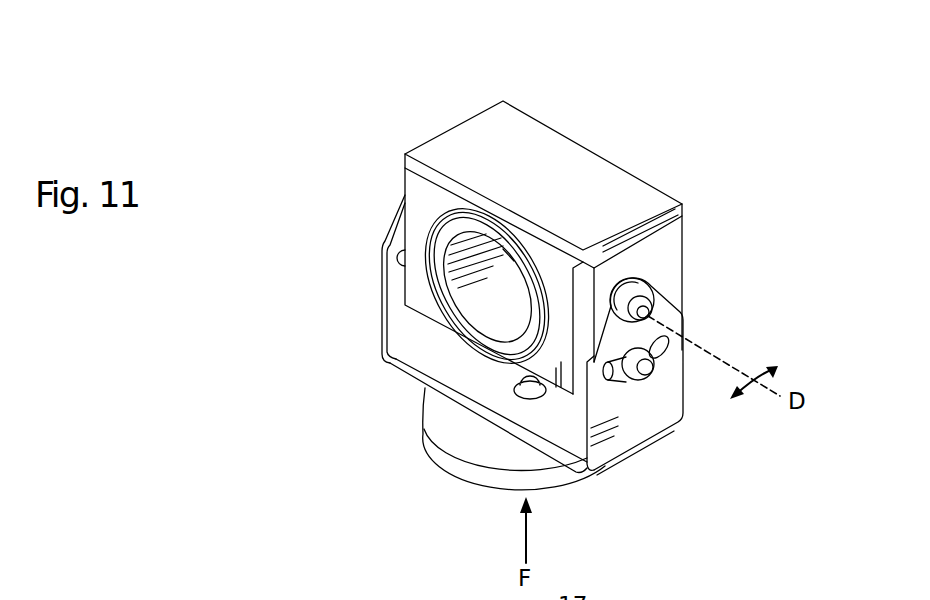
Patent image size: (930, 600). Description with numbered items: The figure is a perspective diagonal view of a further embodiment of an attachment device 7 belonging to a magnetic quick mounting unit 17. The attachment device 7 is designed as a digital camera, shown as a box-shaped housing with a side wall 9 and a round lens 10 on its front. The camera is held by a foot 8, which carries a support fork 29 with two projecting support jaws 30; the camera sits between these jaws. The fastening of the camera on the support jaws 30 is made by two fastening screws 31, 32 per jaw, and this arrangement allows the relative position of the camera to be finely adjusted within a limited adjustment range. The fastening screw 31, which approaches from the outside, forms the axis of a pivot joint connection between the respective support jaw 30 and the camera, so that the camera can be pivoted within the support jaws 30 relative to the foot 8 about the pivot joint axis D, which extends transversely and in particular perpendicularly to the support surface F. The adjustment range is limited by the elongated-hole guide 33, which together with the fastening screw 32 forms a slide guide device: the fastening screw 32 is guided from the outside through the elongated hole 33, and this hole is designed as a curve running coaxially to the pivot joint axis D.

The attachment device 7 is at (490, 128).
The magnetic quick mounting unit 17 is at (679, 160).
The housing side wall 9 is at (668, 247).
The lens 10 is at (480, 318).
The support jaw 30 is at (383, 282).
The fastening screw 31 is at (645, 294).
The foot 8 is at (456, 435).
The elongated-hole guide 33 is at (608, 377).
The support fork 29 is at (562, 435).
The fastening screw 32 is at (645, 376).